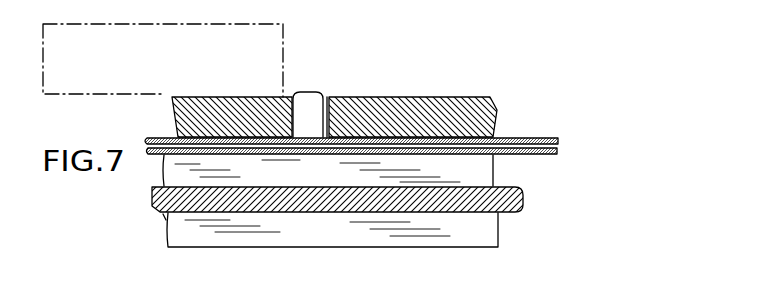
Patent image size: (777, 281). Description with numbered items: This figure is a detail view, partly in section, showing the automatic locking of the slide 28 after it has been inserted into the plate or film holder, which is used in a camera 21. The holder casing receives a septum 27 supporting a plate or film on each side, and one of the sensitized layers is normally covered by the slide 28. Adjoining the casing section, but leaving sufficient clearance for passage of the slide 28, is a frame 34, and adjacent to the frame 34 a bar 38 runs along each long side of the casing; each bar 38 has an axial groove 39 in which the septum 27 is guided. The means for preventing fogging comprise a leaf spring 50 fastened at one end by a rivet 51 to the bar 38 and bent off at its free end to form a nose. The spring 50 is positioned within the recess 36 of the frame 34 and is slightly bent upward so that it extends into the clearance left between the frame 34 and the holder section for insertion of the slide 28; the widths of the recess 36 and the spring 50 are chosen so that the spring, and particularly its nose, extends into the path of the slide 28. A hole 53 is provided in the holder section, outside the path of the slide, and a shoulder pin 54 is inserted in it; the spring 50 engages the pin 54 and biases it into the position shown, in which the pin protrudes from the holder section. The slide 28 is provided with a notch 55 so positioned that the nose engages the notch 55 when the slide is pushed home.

The camera 21 is at (303, 36).
The septum 27 is at (524, 211).
The slide 28 is at (527, 140).
The frame 34 is at (459, 99).
The recess 36 is at (254, 159).
The bar 38 is at (500, 236).
The axial groove 39 is at (163, 214).
The leaf spring 50 is at (316, 161).
The rivet 51 is at (367, 119).
The hole 53 is at (337, 96).
The shoulder pin 54 is at (305, 93).
The notch 55 is at (232, 117).